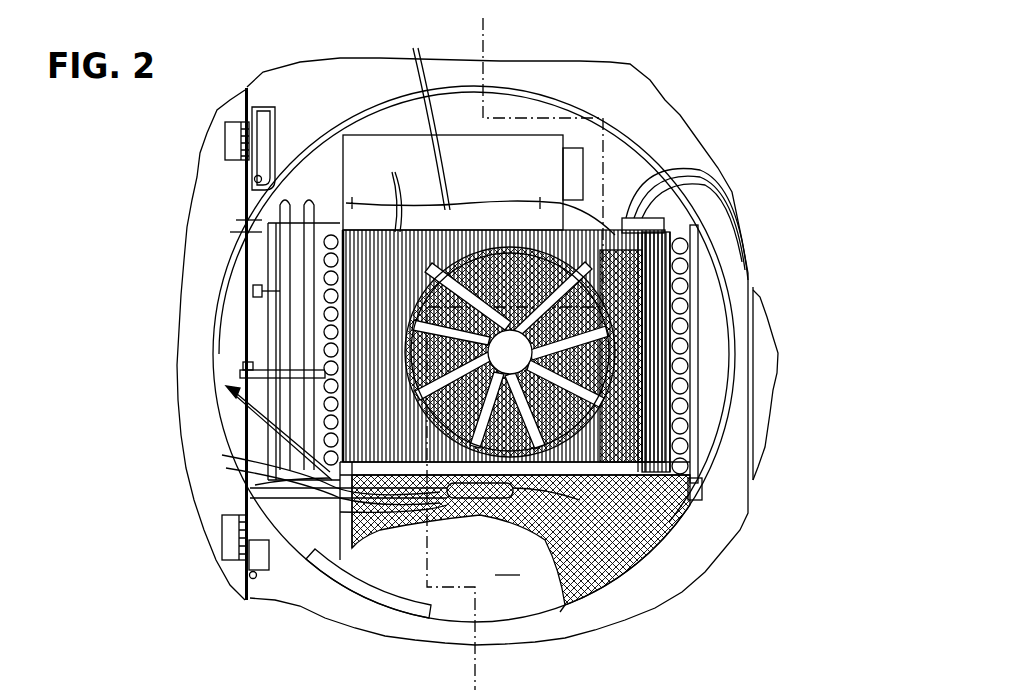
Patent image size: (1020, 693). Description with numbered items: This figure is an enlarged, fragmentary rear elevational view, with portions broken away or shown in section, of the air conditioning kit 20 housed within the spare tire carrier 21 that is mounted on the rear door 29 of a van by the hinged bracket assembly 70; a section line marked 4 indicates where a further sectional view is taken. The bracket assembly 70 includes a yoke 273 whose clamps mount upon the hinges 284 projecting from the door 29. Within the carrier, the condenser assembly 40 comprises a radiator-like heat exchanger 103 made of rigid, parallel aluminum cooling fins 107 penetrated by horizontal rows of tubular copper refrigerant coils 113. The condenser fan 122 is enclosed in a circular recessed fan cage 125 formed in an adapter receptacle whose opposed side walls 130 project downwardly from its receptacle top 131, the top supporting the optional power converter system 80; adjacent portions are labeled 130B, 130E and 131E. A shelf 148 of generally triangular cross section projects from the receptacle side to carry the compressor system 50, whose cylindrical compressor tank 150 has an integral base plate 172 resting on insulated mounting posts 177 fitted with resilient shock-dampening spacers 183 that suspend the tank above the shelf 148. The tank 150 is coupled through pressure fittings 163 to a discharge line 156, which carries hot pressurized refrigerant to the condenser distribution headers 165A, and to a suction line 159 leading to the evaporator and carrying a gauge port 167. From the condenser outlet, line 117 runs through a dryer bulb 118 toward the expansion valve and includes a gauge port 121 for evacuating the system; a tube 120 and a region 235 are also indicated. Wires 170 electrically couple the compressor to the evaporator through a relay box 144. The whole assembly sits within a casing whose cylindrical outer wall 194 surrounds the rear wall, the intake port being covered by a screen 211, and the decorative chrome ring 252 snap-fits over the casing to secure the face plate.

The air conditioning kit 20 is at (898, 180).
The spare tire carrier 21 is at (597, 118).
The rear door 29 is at (305, 98).
The condenser assembly 40 is at (312, 424).
The compressor system 50 is at (260, 240).
The hinged bracket assembly 70 is at (236, 107).
The power converter system 80 is at (467, 134).
The heat exchanger 103 is at (525, 232).
The cooling fins 107 is at (377, 190).
The refrigerant coils 113 is at (690, 262).
The line 117 is at (262, 520).
The dryer bulb 118 is at (507, 593).
The tube 120 is at (340, 492).
The gauge port 121 is at (563, 602).
The condenser fan 122 is at (672, 340).
The fan cage 125 is at (680, 372).
The receptacle side walls 130 is at (700, 423).
The condenser bottom 130B is at (255, 485).
The condenser end 130E is at (700, 490).
The receptacle top 131 is at (700, 228).
The tube end 131E is at (622, 175).
The relay box 144 is at (660, 215).
The shelf 148 is at (250, 442).
The compressor tank 150 is at (285, 300).
The discharge line 156 is at (254, 232).
The suction line 159 is at (253, 291).
The pressure fittings 163 is at (305, 130).
The fluid distribution headers 165A is at (248, 222).
The gauge port 167 is at (300, 262).
The wires 170 is at (412, 121).
The base plate 172 is at (272, 330).
The mounting posts 177 is at (240, 366).
The shock-dampening spacers 183 is at (240, 375).
The outer wall 194 is at (615, 597).
The screen 211 is at (625, 572).
The region 235 is at (472, 566).
The chrome ring 252 is at (352, 605).
The yoke 273 is at (263, 107).
The hinges 284 is at (232, 140).
The section line 4 is at (517, 42).